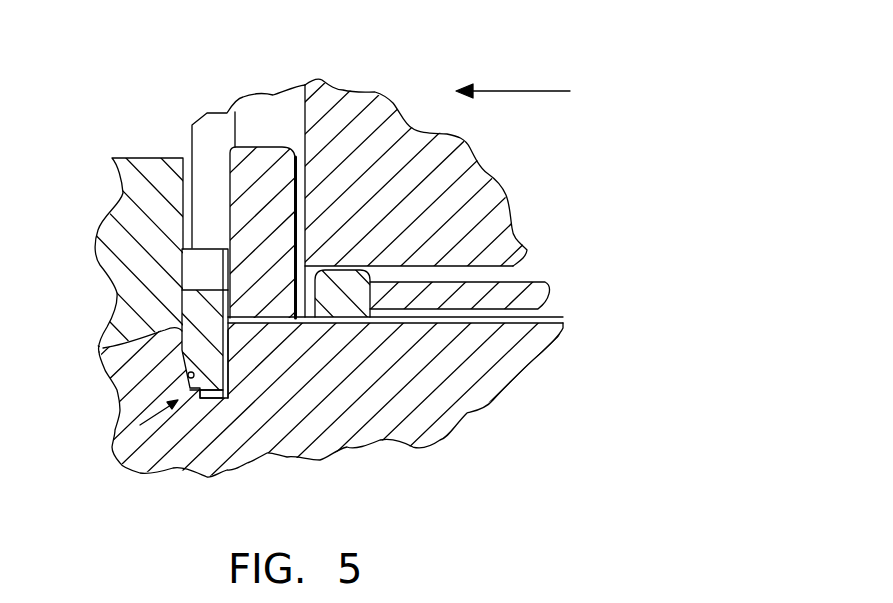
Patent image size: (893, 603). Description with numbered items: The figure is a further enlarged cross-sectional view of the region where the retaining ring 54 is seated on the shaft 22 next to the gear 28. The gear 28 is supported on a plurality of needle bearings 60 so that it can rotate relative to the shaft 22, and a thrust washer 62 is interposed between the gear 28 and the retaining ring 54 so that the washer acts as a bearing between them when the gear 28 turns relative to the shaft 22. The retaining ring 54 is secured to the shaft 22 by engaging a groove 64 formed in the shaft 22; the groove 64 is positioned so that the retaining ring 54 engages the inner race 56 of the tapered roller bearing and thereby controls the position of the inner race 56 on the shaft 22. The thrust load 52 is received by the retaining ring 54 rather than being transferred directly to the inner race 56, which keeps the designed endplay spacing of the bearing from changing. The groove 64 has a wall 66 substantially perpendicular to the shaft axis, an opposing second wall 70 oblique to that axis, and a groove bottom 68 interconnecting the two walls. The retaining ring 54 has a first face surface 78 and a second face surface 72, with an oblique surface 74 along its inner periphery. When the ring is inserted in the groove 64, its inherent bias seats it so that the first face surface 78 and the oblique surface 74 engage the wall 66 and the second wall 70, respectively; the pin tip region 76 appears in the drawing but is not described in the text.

The shaft 22 is at (503, 370).
The gear 28 is at (347, 110).
The thrust load 52 is at (515, 91).
The retaining ring 54 is at (187, 305).
The inner race 56 is at (128, 210).
The needle bearings 60 is at (530, 297).
The thrust washer 62 is at (252, 160).
The groove 64 is at (140, 425).
The wall 66 is at (230, 343).
The groove bottom 68 is at (208, 397).
The second wall 70 is at (188, 377).
The second face surface 72 is at (180, 344).
The oblique surface 74 is at (172, 402).
The pin tip 76 is at (207, 399).
The first face surface 78 is at (227, 333).